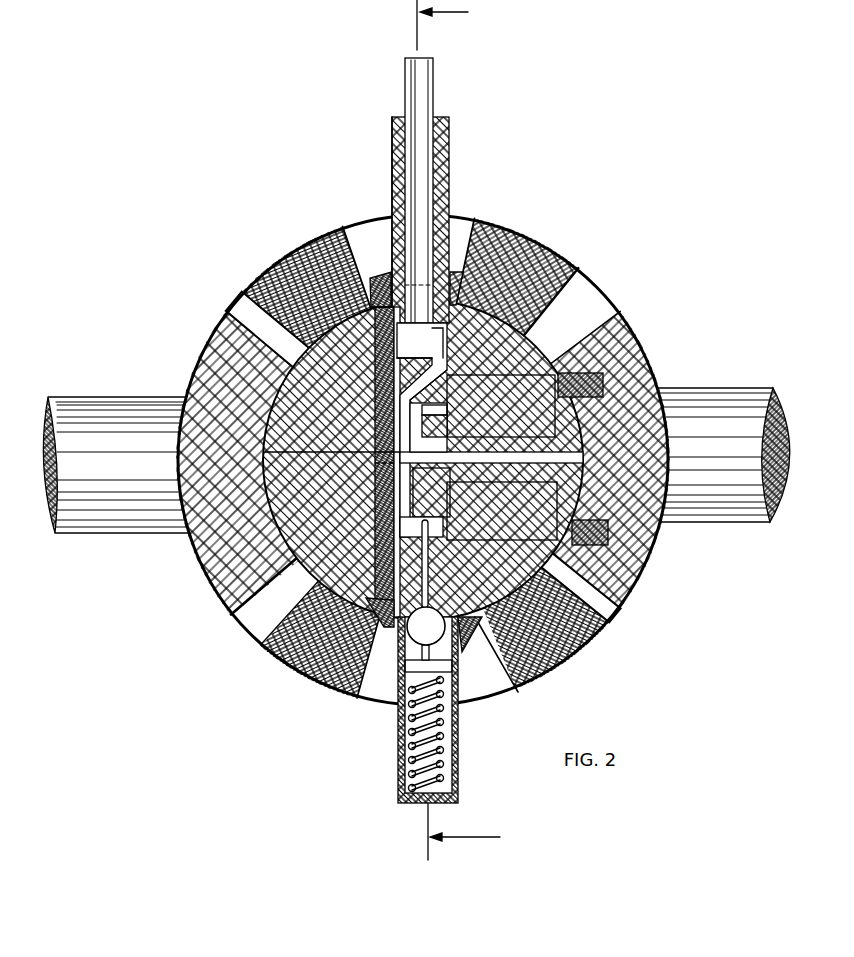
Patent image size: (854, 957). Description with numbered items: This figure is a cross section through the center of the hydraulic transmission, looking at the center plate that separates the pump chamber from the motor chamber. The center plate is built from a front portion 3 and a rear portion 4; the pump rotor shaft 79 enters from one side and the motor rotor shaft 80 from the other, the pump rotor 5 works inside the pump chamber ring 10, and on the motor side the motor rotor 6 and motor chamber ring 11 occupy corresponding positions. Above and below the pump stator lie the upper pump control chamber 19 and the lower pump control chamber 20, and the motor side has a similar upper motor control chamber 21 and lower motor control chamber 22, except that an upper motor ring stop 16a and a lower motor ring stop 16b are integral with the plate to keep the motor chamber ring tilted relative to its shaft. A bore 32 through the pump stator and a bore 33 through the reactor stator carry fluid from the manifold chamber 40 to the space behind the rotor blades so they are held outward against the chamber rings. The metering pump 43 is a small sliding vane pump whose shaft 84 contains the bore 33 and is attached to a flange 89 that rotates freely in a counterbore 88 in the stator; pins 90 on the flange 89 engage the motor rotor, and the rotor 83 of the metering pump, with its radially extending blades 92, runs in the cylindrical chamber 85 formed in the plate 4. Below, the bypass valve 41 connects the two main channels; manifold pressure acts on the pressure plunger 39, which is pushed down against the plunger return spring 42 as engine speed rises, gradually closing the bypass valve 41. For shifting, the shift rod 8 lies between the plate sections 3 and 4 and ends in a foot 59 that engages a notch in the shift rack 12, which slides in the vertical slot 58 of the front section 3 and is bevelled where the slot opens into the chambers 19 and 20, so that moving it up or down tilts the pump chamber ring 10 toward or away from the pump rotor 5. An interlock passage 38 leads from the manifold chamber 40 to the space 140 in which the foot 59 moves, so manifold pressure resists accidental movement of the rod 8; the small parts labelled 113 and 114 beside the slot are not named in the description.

The front portion of center plate 3 is at (364, 148).
The rear portion of center plate 4 is at (449, 126).
The pump rotor 5 is at (234, 344).
The housing right section 6 is at (620, 328).
The shift rod 8 is at (425, 75).
The pump chamber ring 10 is at (280, 266).
The housing upper right segment 11 is at (523, 240).
The shift rack 12 is at (384, 286).
The upper motor ring stop 16a is at (463, 283).
The lower motor ring stop 16b is at (485, 620).
The upper pump control chamber 19 is at (372, 218).
The lower pump control chamber 20 is at (372, 697).
The upper motor control chamber 21 is at (462, 222).
The lower motor control chamber 22 is at (507, 690).
The bore through pump stator 32 is at (263, 458).
The bore through reactor stator 33 is at (584, 452).
The passage 38 is at (412, 417).
The pressure plunger 39 is at (432, 540).
The manifold chamber 40 is at (440, 517).
The bypass valve 41 is at (446, 614).
The plunger return spring 42 is at (452, 738).
The metering pump 43 is at (547, 360).
The vertical slot 58 is at (374, 383).
The foot 59 is at (368, 345).
The pump rotor shaft 79 is at (70, 397).
The motor rotor shaft 80 is at (737, 397).
The metering pump rotor 83 is at (438, 430).
The metering pump shaft 84 is at (501, 406).
The lower block 85 is at (502, 511).
The counterbore 88 is at (548, 373).
The flange 89 is at (580, 492).
The pins 90 is at (603, 384).
The radially extending blades 92 is at (445, 408).
The seal ring 113 is at (383, 292).
The lower seal 114 is at (358, 616).
The space 140 is at (422, 430).